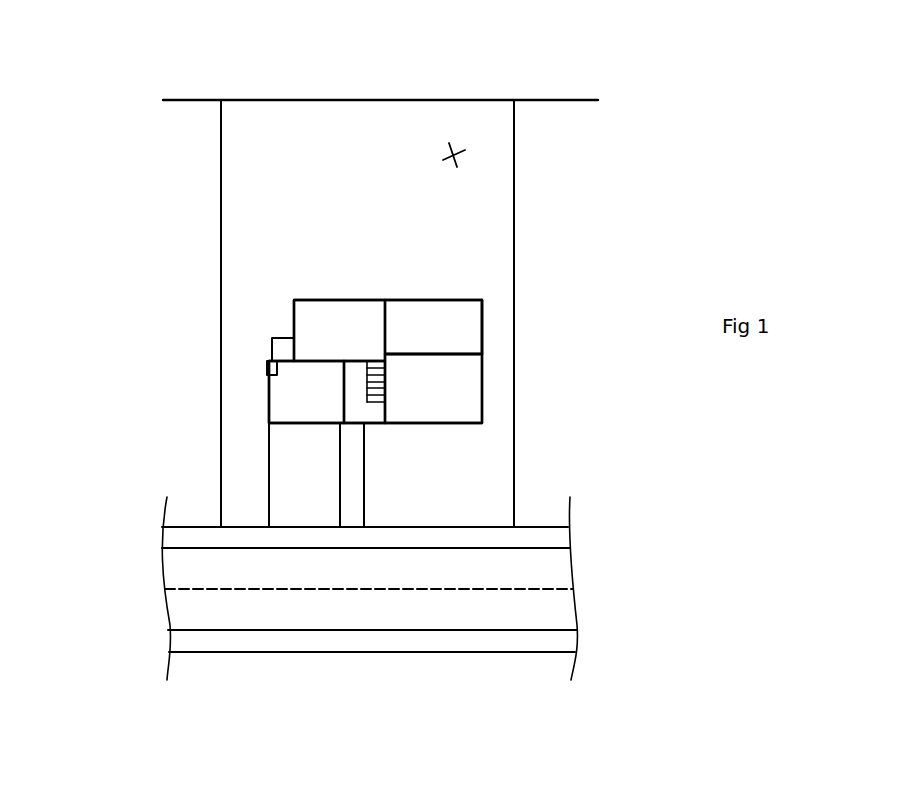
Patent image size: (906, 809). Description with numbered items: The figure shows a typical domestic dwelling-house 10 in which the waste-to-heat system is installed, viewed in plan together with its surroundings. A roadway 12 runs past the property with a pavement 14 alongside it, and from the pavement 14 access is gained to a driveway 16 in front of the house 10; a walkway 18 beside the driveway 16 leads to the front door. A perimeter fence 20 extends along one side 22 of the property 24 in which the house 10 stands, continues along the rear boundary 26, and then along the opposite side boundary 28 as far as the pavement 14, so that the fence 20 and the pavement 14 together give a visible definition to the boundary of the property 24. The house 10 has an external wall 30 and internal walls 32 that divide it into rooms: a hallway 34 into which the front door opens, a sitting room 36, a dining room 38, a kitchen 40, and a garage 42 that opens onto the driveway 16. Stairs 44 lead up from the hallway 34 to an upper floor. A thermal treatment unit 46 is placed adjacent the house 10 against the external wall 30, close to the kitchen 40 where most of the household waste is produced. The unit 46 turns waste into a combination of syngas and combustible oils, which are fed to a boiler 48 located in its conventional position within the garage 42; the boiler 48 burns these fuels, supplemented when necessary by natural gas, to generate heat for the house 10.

The domestic dwelling-house 10 is at (295, 308).
The roadway 12 is at (323, 613).
The pavement 14 is at (517, 537).
The driveway 16 is at (290, 502).
The walkway 18 is at (353, 475).
The perimeter fence 20 is at (518, 397).
The side 22 is at (516, 263).
The property 24 is at (460, 143).
The rear boundary 26 is at (433, 100).
The opposite side boundary 28 is at (220, 145).
The external wall 30 is at (482, 325).
The internal walls 32 is at (462, 354).
The hallway 34 is at (363, 410).
The sitting room 36 is at (447, 405).
The dining room 38 is at (435, 316).
The kitchen 40 is at (323, 322).
The garage 42 is at (287, 409).
The stairs 44 is at (375, 361).
The thermal treatment unit 46 is at (283, 350).
The boiler 48 is at (270, 375).